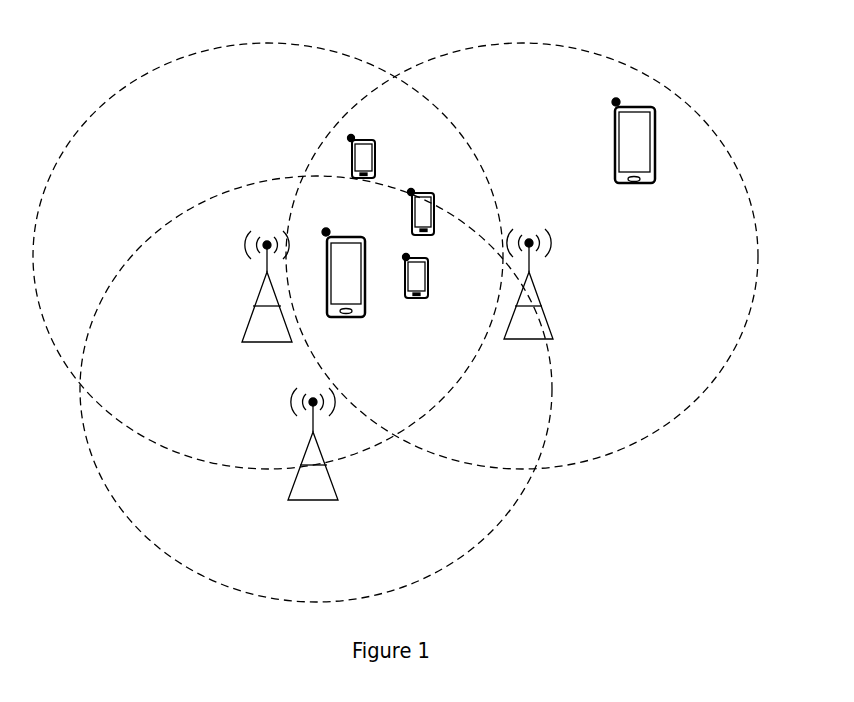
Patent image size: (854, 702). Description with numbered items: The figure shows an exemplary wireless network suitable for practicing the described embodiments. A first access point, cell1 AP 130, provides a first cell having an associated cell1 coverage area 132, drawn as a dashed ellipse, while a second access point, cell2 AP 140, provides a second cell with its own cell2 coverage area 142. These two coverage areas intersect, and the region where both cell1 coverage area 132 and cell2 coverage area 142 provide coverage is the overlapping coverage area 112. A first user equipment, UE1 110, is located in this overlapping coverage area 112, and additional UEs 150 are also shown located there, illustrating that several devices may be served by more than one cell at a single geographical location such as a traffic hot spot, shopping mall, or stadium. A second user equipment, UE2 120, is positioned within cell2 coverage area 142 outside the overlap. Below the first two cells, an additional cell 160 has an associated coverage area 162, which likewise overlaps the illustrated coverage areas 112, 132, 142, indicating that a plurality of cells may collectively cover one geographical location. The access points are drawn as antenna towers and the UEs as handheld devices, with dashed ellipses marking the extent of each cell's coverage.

The UE1 110 is at (348, 318).
The overlapping coverage area 112 is at (384, 125).
The UE2 120 is at (640, 187).
The cell1 AP 130 is at (240, 343).
The cell1 coverage area 132 is at (256, 101).
The cell2 AP 140 is at (555, 341).
The cell2 coverage area 142 is at (526, 101).
The additional UEs 150 is at (377, 159).
The cell 160 is at (287, 500).
The coverage area 162 is at (303, 566).